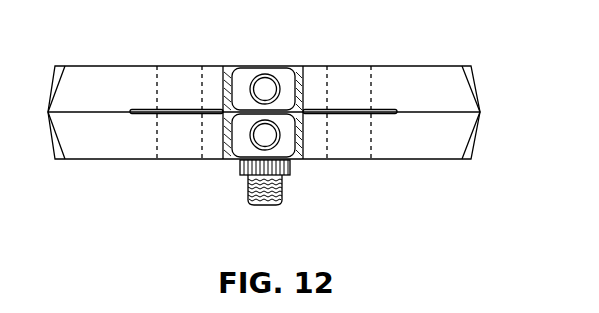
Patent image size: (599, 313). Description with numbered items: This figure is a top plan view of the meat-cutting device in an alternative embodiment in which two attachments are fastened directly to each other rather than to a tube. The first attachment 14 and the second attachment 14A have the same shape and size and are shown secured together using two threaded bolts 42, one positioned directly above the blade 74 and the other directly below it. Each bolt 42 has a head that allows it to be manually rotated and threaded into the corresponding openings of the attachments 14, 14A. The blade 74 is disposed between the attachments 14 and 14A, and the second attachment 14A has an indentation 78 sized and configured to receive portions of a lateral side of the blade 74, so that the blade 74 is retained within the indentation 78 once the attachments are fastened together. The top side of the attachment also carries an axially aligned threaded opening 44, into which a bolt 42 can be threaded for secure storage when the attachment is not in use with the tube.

The attachment 14 is at (110, 146).
The second attachment 14A is at (105, 70).
The blade 74 is at (165, 110).
The indentation 78 is at (387, 98).
The threaded opening 44 is at (262, 86).
The threaded bolt 42 is at (283, 197).